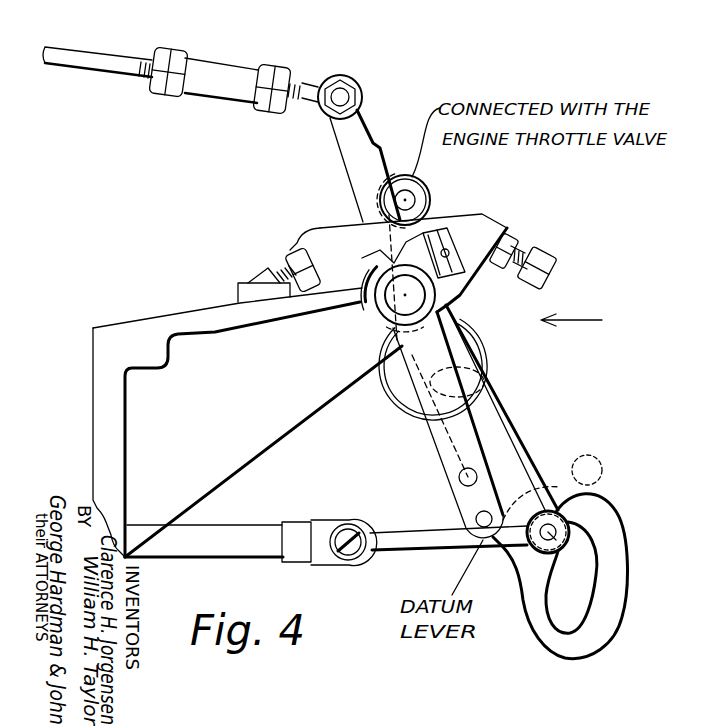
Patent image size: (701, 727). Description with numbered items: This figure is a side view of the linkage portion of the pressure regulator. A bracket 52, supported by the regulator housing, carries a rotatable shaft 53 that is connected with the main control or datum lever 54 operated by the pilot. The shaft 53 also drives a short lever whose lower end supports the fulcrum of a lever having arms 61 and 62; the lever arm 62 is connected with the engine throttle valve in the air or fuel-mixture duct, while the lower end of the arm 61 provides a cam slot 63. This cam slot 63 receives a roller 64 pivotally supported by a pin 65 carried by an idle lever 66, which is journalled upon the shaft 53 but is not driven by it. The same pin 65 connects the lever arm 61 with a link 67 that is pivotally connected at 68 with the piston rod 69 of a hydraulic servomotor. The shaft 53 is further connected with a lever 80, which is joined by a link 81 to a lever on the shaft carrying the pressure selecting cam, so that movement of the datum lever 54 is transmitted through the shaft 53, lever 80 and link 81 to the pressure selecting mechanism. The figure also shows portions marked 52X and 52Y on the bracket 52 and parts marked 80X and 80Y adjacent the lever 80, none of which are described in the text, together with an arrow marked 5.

The link 81 is at (103, 60).
The lever 80 is at (342, 157).
The lever arm 62 is at (430, 188).
The lug of bracket 52X is at (297, 242).
The lug of bracket 52Y is at (500, 223).
The adjusting screw 80X is at (280, 268).
The adjusting screw 80Y is at (528, 257).
The bracket 52 is at (198, 313).
The rotatable shaft 53 is at (397, 305).
The datum lever 54 is at (435, 432).
The idle lever 66 is at (513, 455).
The roller 64 is at (567, 513).
The lever arm 61 is at (610, 510).
The cam slot 63 is at (582, 537).
The pin 65 is at (554, 538).
The link 67 is at (433, 531).
The pivotal connection 68 is at (352, 530).
The piston rod 69 is at (235, 527).
The viewing direction of Fig. 5 is at (581, 321).